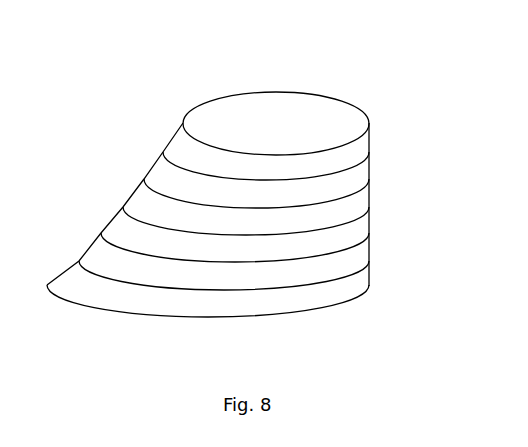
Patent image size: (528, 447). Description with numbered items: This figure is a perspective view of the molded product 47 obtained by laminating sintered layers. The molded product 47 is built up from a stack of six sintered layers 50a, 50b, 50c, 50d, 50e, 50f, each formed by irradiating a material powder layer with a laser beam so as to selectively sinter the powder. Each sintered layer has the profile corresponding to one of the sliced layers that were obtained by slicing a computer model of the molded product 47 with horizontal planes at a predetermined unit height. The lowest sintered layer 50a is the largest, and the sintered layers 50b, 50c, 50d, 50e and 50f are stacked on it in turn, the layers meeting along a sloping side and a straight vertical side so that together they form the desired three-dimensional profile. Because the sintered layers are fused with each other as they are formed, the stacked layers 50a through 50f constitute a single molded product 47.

The molded product 47 is at (393, 80).
The sintered layer 50a is at (367, 281).
The sintered layer 50b is at (368, 249).
The sintered layer 50c is at (368, 225).
The sintered layer 50d is at (368, 201).
The sintered layer 50e is at (368, 174).
The sintered layer 50f is at (370, 146).